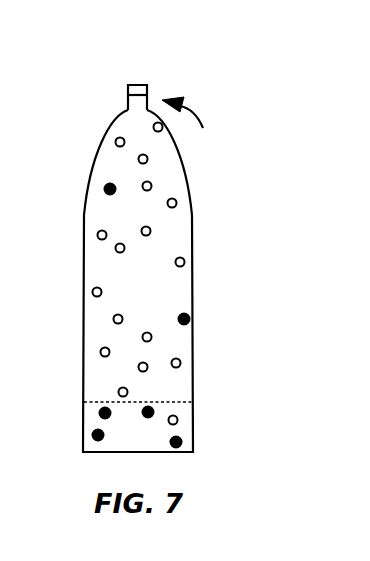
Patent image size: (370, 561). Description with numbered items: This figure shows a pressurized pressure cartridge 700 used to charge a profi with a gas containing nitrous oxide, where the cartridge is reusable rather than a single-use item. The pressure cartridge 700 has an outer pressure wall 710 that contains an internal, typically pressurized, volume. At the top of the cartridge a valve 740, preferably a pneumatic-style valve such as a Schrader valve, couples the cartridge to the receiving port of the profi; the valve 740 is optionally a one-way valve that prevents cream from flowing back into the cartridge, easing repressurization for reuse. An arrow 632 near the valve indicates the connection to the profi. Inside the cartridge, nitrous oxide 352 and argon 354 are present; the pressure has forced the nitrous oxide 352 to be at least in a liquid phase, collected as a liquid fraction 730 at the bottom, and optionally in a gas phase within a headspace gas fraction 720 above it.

The pressure cartridge 700 is at (208, 54).
The outer pressure wall 710 is at (100, 145).
The valve 740 is at (134, 84).
The direction of flow arrow 632 is at (198, 129).
The headspace gas fraction 720 is at (164, 294).
The liquid fraction 730 is at (160, 441).
The argon 354 is at (184, 258).
The nitrous oxide 352 is at (189, 311).